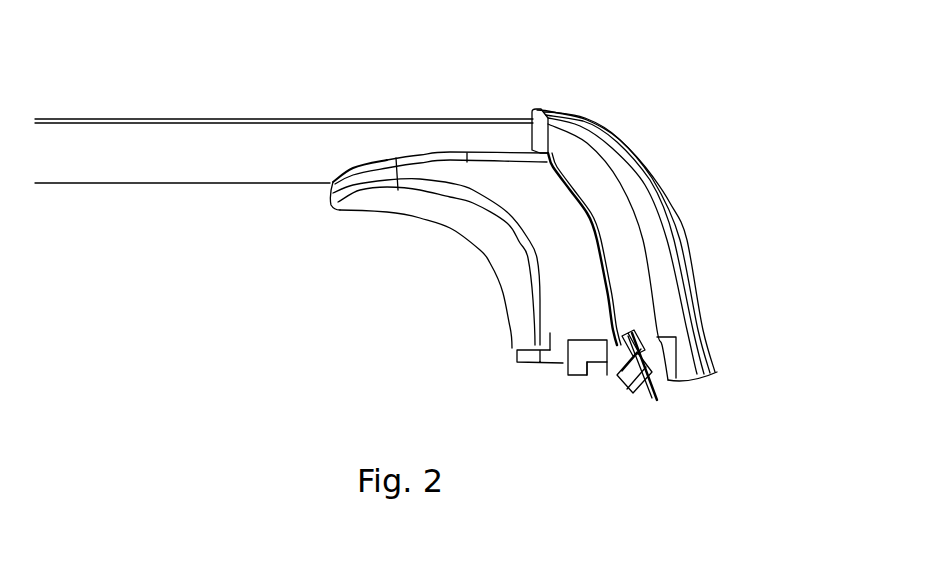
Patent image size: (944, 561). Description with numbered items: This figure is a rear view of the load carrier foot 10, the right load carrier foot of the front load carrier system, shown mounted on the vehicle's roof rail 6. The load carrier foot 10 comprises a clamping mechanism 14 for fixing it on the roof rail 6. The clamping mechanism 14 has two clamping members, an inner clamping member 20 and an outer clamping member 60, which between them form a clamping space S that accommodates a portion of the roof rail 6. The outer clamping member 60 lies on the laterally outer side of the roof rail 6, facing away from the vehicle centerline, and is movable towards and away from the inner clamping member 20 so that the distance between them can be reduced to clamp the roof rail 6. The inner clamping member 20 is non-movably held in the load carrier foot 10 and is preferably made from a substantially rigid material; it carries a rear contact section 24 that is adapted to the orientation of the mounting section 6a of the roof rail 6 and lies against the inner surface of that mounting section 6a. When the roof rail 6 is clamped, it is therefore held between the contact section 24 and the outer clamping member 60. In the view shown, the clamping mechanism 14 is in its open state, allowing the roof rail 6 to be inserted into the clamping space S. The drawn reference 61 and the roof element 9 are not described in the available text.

The roof panel 9 is at (242, 148).
The load carrier foot 10 is at (713, 258).
The inner clamping member 20 is at (560, 333).
The contact section 24 is at (567, 345).
The mounting section 6a is at (562, 357).
The roof rail 6 is at (580, 373).
The clamping space S is at (588, 387).
The clamping mechanism 14 is at (604, 413).
The outer clamping member 60 is at (657, 400).
The nut 61 is at (620, 392).